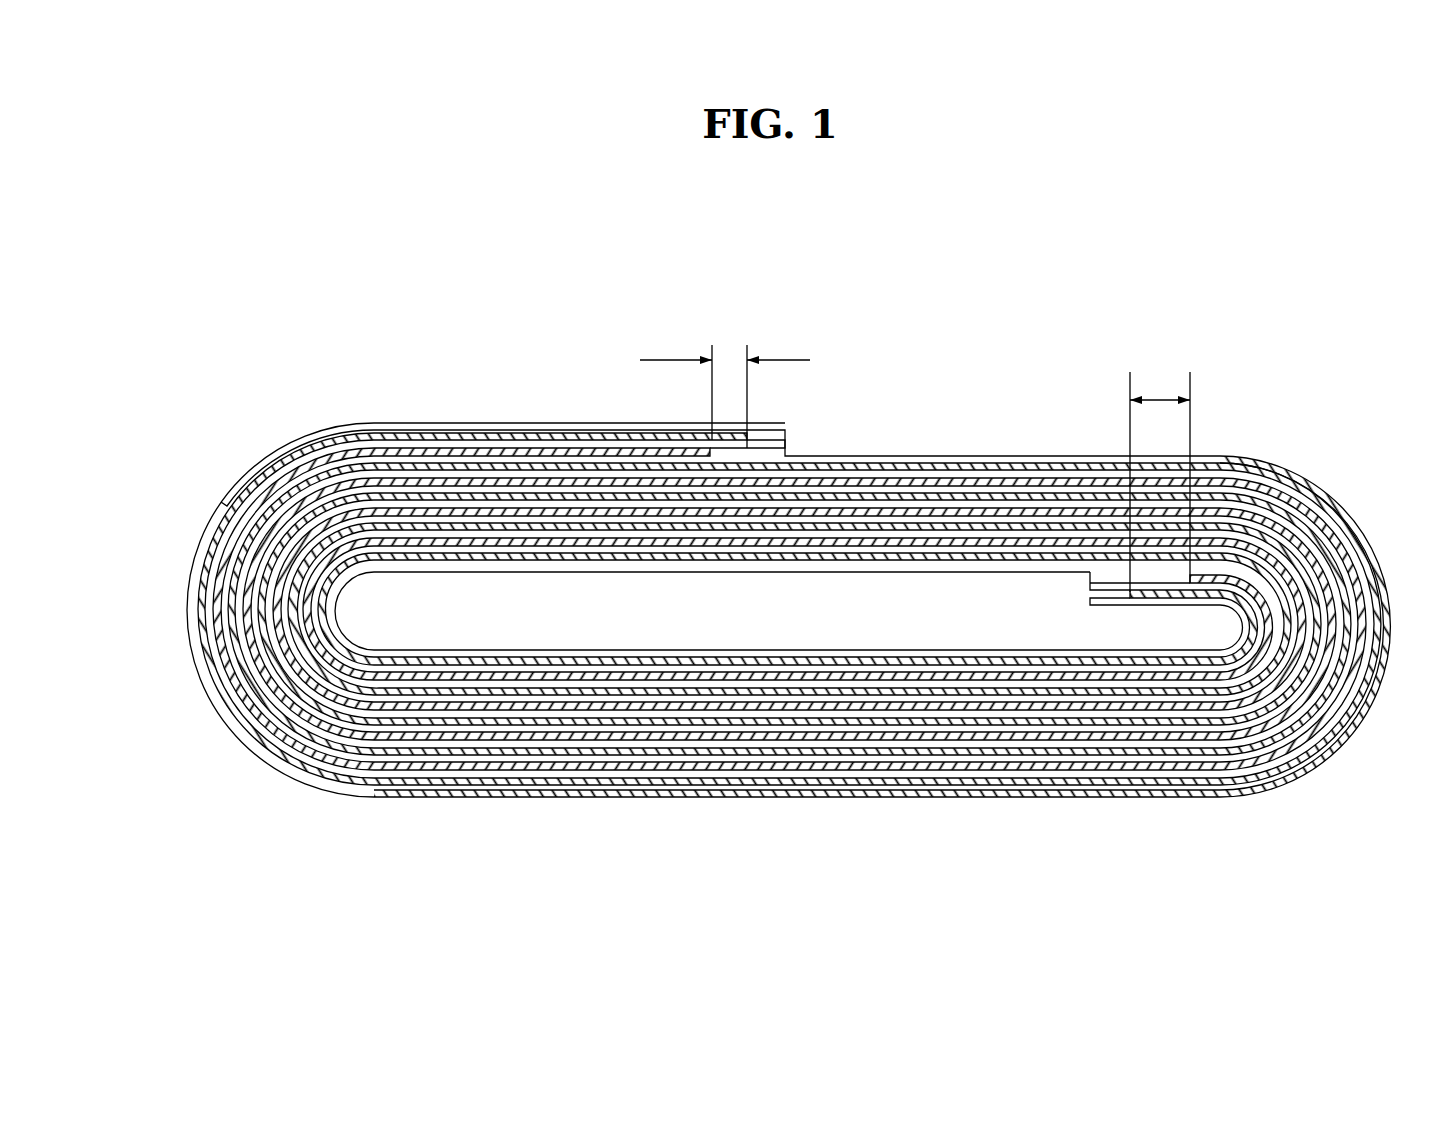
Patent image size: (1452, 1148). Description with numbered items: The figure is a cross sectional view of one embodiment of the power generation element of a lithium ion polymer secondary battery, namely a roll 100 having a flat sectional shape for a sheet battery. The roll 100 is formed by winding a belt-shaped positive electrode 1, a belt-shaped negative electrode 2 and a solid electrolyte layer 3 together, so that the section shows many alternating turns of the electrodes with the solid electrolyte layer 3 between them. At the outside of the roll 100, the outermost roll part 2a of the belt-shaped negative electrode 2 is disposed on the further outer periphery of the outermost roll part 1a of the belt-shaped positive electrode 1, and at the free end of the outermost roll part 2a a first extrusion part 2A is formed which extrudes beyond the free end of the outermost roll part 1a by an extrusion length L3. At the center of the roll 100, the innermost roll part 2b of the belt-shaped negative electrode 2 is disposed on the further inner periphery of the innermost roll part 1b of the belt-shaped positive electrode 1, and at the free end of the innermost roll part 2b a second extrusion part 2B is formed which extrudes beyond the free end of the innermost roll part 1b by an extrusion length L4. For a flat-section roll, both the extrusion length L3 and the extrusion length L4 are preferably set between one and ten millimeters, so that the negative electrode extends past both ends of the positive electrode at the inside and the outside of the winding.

The roll 100 is at (970, 336).
The belt-shaped positive electrode 1 is at (200, 570).
The outermost roll part of the belt-shaped positive electrode 1a is at (470, 447).
The innermost roll part of the belt-shaped positive electrode 1b is at (1215, 581).
The belt-shaped negative electrode 2 is at (225, 503).
The outermost roll part of the belt-shaped negative electrode 2a is at (535, 428).
The innermost roll part of the belt-shaped negative electrode 2b is at (1242, 598).
The first extrusion part 2A is at (765, 437).
The second extrusion part 2B is at (1147, 592).
The solid electrolyte layer 3 is at (830, 797).
The extrusion length of the first extrusion part L3 is at (740, 343).
The extrusion length of the second extrusion part L4 is at (1160, 372).